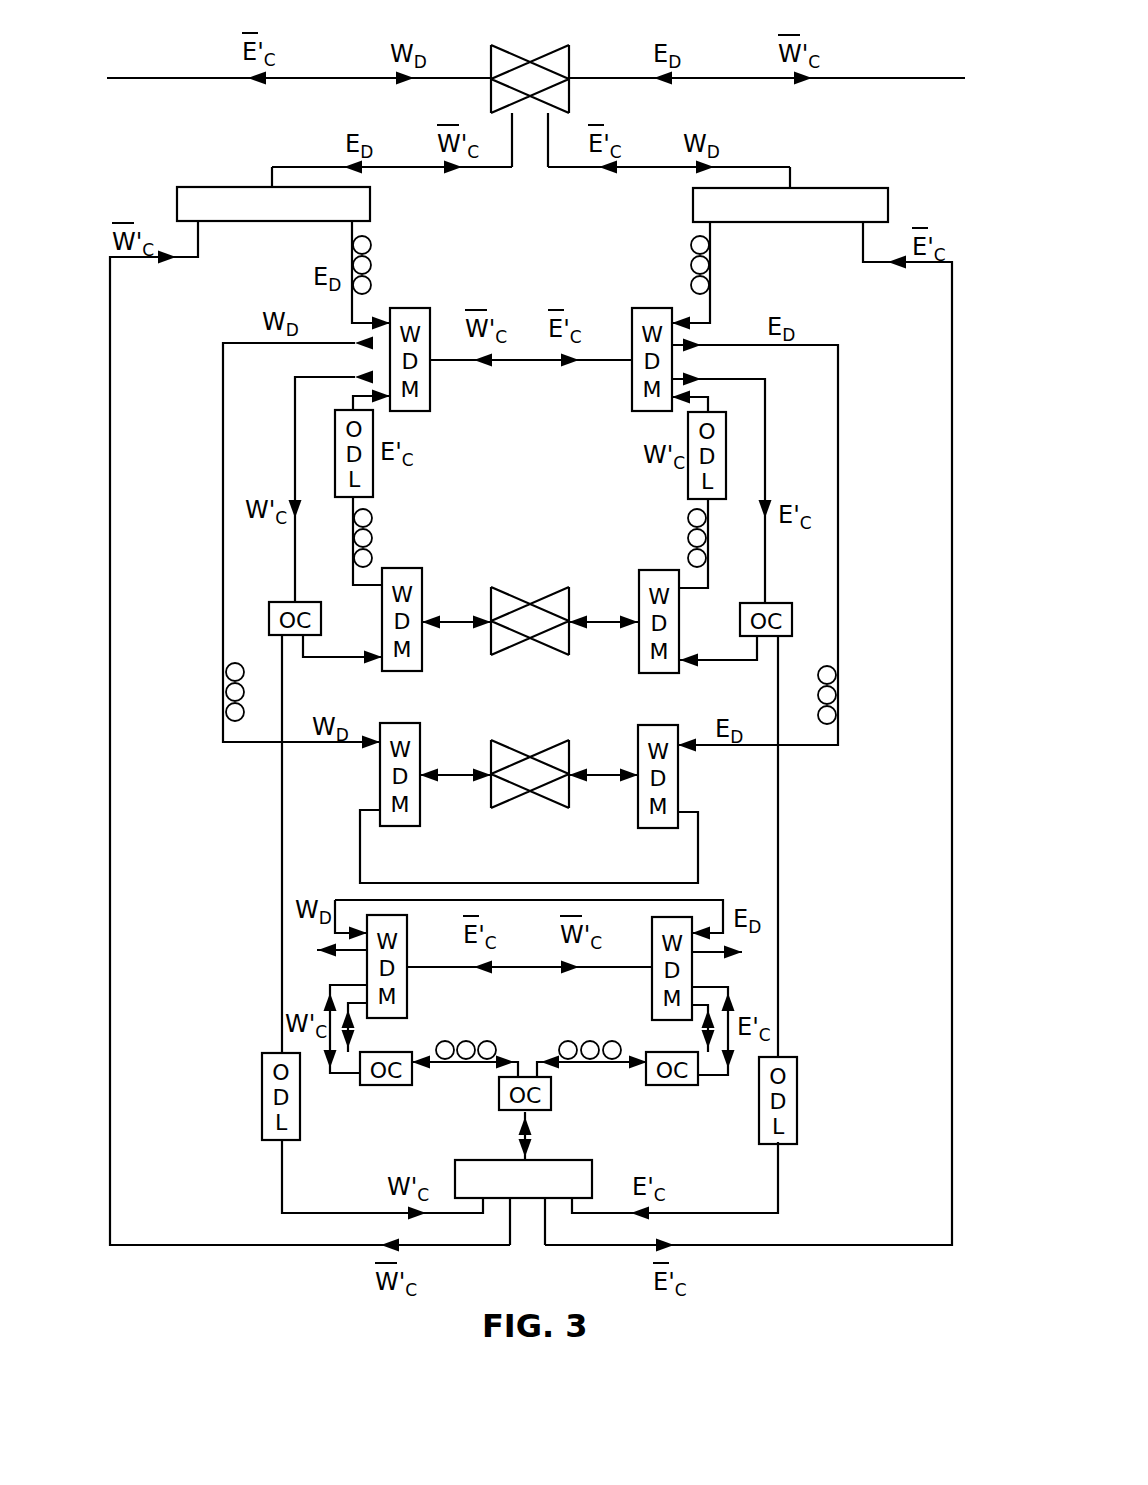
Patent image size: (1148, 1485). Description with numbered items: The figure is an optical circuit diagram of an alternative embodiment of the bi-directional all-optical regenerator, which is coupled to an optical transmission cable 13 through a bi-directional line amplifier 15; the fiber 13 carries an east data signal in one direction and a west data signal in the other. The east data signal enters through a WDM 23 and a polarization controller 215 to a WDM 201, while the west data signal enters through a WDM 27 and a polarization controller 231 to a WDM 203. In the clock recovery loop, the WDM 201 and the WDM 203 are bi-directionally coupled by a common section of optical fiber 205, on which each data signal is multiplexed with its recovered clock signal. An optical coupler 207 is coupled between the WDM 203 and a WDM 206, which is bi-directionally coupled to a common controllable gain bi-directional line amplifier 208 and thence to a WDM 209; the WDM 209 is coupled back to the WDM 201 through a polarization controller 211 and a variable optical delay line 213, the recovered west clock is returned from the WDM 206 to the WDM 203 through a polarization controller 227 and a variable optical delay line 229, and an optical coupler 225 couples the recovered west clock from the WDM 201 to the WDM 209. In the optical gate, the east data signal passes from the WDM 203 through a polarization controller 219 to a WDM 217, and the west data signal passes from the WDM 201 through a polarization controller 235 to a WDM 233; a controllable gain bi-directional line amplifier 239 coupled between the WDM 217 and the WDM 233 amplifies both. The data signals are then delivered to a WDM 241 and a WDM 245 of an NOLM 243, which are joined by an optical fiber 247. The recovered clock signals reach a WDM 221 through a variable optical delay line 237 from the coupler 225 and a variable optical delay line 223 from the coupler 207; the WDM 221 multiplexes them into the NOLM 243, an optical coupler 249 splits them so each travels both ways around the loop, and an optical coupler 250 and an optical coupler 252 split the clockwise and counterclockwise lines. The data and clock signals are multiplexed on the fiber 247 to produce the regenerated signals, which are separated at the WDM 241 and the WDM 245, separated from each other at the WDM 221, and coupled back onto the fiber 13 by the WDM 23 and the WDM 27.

The optical transmission cable 13 is at (865, 78).
The bi-directional line amplifier 15 is at (513, 46).
The wavelength division multiplexer 23 is at (372, 214).
The wavelength division multiplexer 27 is at (693, 214).
The polarization controller 215 is at (373, 264).
The polarization controller 231 is at (690, 264).
The WDM 201 is at (410, 308).
The WDM 203 is at (650, 308).
The optical fiber 205 is at (458, 362).
The variable optical delay line 213 is at (374, 478).
The variable optical delay line 229 is at (686, 478).
The polarization controller 211 is at (374, 540).
The polarization controller 227 is at (687, 540).
The WDM 209 is at (405, 568).
The bi-directional line amplifier 208 is at (502, 587).
The WDM 206 is at (648, 570).
The optical coupler 207 is at (780, 603).
The optical coupler 225 is at (280, 602).
The polarization controller 235 is at (225, 690).
The polarization controller 219 is at (840, 690).
The WDM 233 is at (403, 723).
The WDM 217 is at (654, 725).
The bi-directional line amplifier 239 is at (503, 812).
The WDM 245 is at (367, 972).
The WDM 241 is at (692, 975).
The optical fiber 247 is at (585, 968).
The NOLM 243 is at (543, 1014).
The optical coupler 250 is at (386, 1086).
The optical coupler 249 is at (498, 1090).
The optical coupler 252 is at (672, 1087).
The variable optical delay line 237 is at (262, 1100).
The variable optical delay line 223 is at (797, 1100).
The WDM 221 is at (580, 1160).